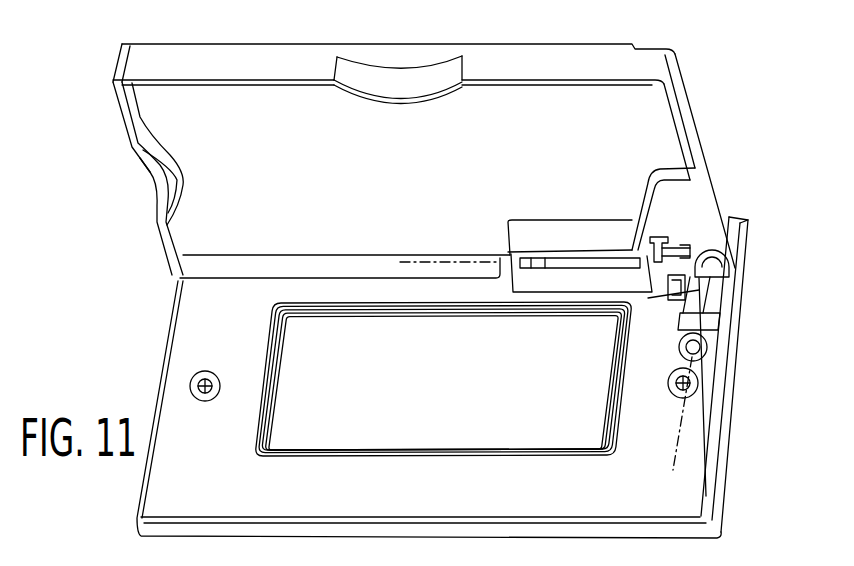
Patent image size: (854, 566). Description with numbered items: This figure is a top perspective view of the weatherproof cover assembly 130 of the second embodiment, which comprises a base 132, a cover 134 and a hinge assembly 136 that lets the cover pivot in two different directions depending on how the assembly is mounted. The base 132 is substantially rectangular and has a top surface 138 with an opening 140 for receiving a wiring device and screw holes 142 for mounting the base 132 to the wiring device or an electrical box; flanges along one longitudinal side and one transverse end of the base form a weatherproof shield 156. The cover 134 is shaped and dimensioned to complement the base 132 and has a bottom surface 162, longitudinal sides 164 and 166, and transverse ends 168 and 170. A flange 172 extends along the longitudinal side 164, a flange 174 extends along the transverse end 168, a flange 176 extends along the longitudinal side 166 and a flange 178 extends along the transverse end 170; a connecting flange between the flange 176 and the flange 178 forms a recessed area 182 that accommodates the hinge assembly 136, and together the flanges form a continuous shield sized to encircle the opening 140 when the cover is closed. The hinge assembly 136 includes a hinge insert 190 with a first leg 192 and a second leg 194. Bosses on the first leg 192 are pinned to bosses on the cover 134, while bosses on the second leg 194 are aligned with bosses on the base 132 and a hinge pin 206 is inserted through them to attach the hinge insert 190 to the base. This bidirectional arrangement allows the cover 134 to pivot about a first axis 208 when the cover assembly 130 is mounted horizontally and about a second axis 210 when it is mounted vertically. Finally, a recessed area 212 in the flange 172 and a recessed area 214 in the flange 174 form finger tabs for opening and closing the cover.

The weatherproof cover assembly 130 is at (147, 342).
The base 132 is at (181, 524).
The cover 134 is at (688, 89).
The hinge assembly 136 is at (683, 208).
The top surface 138 is at (642, 488).
The opening 140 is at (299, 414).
The screw holes 142 is at (191, 394).
The weatherproof shield 156 is at (742, 374).
The bottom surface 162 is at (217, 218).
The longitudinal side 164 is at (187, 44).
The longitudinal side 166 is at (375, 254).
The transverse end 168 is at (143, 103).
The transverse end 170 is at (686, 136).
The flange 172 is at (530, 63).
The flange 174 is at (132, 124).
The flange 176 is at (268, 268).
The flange 178 is at (677, 138).
The recessed area 182 is at (684, 241).
The hinge insert 190 is at (648, 297).
The first leg 192 is at (552, 287).
The second leg 194 is at (672, 338).
The hinge pin 206 is at (718, 298).
The first axis 208 is at (462, 262).
The second axis 210 is at (683, 432).
The recessed area 212 is at (392, 78).
The recessed area 214 is at (150, 179).